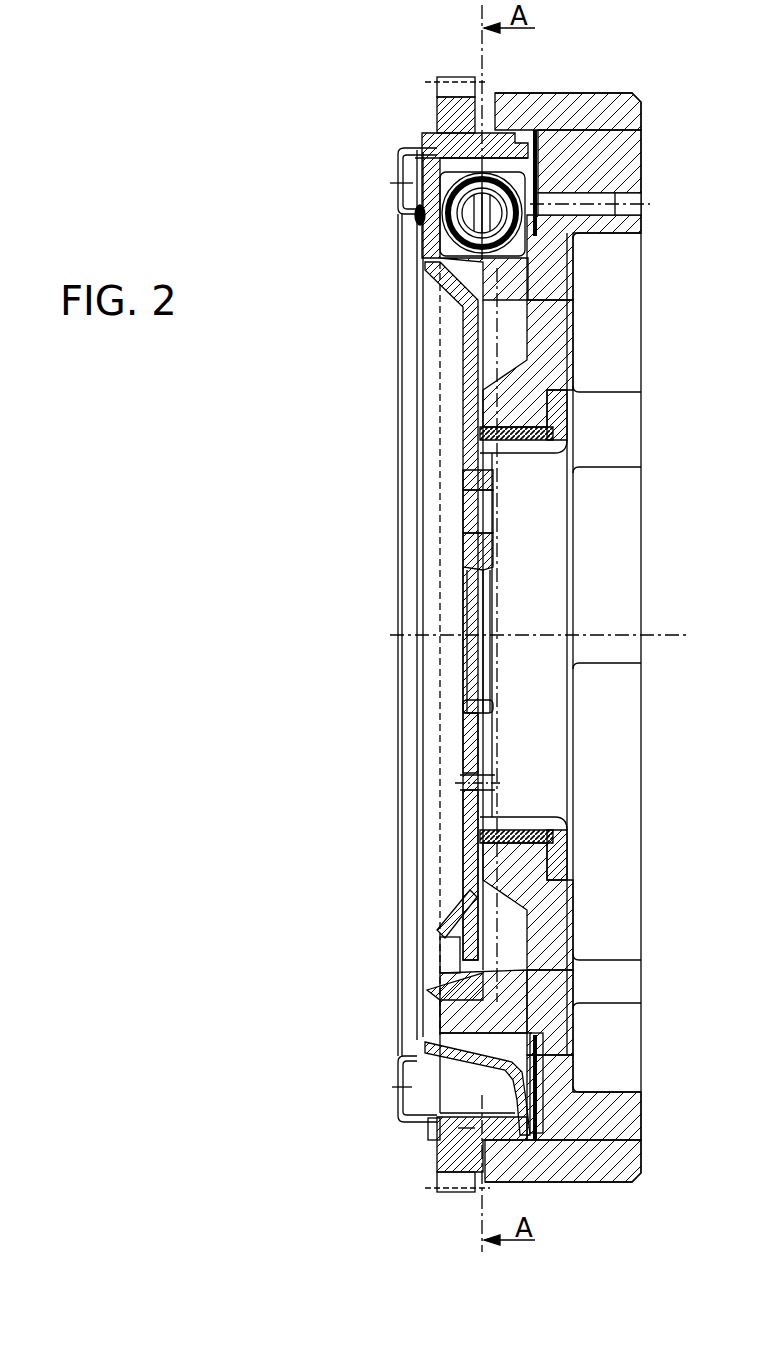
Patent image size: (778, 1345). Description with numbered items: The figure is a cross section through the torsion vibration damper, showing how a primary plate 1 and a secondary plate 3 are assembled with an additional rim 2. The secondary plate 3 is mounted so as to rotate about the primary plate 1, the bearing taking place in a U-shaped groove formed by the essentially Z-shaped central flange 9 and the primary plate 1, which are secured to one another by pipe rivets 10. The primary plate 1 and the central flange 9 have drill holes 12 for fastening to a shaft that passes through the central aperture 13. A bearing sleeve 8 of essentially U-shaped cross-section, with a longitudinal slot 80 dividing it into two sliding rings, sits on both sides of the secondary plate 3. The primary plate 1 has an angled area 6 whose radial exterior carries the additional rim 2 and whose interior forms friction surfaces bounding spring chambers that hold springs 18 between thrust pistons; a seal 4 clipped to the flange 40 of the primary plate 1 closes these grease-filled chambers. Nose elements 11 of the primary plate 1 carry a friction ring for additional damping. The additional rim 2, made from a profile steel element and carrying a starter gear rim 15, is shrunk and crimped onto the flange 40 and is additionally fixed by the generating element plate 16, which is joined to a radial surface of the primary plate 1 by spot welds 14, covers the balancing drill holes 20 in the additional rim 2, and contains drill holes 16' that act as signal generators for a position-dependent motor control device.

The primary plate 1 is at (440, 273).
The additional rim 2 is at (437, 110).
The secondary plate 3 is at (557, 152).
The seal 4 is at (540, 187).
The angled area 6 is at (513, 150).
The bearing sleeve 8 is at (562, 430).
The central flange 9 is at (487, 465).
The pipe rivets 10 is at (455, 783).
The nose elements 11 is at (480, 945).
The drill holes 12 is at (430, 510).
The central aperture 13 is at (473, 627).
The spot welds 14 is at (417, 233).
The starter gear rim 15 is at (437, 1170).
The generating element plate 16 is at (415, 674).
The drill holes 16' is at (366, 622).
The springs 18 is at (398, 153).
The drill holes 20 is at (440, 1140).
The flange 40 is at (530, 140).
The longitudinal slot 80 is at (535, 912).